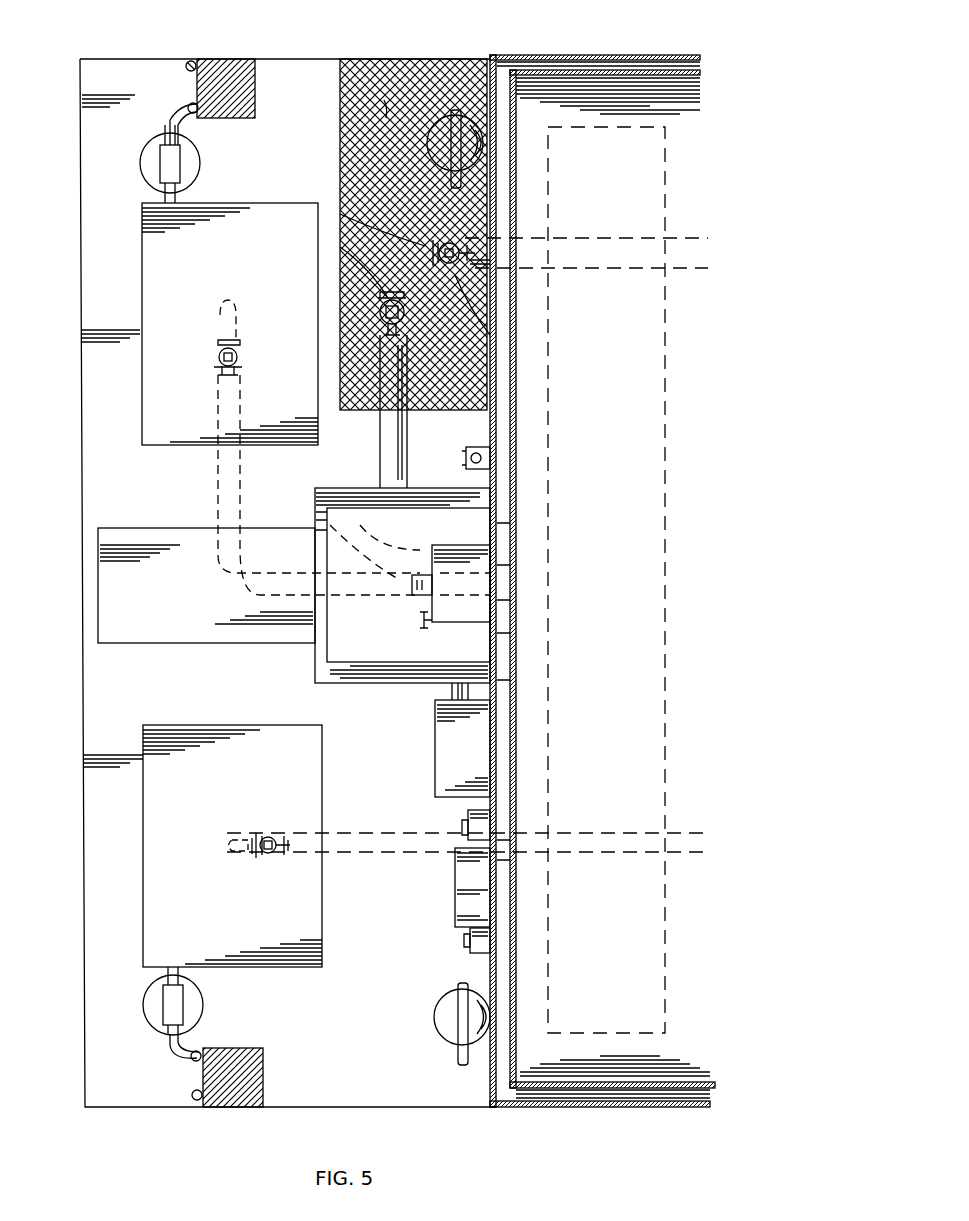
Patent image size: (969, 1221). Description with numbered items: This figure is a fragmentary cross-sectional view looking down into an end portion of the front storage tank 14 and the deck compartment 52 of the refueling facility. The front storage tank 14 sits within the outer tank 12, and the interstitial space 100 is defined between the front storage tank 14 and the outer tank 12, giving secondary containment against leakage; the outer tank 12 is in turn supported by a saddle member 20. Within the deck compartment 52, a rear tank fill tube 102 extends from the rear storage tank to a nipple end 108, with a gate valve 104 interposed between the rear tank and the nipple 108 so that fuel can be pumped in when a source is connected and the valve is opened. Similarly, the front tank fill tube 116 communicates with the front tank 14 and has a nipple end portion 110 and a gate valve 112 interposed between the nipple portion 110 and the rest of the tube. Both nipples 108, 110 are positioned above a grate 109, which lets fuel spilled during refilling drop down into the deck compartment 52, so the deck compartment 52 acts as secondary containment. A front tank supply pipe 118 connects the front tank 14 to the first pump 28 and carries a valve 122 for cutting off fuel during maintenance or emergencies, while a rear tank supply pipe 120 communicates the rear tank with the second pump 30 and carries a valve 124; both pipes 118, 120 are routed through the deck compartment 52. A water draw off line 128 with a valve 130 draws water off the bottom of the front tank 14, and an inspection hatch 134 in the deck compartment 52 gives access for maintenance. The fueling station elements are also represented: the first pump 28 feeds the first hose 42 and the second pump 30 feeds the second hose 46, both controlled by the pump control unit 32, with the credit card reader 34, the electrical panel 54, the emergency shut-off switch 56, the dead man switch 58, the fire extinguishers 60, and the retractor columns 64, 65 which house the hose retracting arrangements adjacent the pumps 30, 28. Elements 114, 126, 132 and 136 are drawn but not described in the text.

The outer tank 12 is at (615, 1104).
The front inner storage tank 14 is at (590, 1082).
The saddle member 20 is at (668, 450).
The first pump 28 is at (142, 302).
The second pump 30 is at (143, 850).
The pump control unit 32 is at (435, 745).
The credit card reader 34 is at (355, 685).
The first hose 42 is at (178, 100).
The second hose 46 is at (193, 1097).
The deck compartment 52 is at (80, 437).
The electrical panel 54 is at (455, 888).
The emergency shut-off switch 56 is at (462, 828).
The dead man switch 58 is at (465, 942).
The fire extinguisher 60 is at (450, 115).
The retractor column 64 is at (263, 1078).
The retractor column 65 is at (230, 118).
The interstitial space 100 is at (570, 1107).
The rear tank fill tube 102 is at (580, 230).
The gate valve 104 is at (455, 265).
The nipple end 108 is at (340, 205).
The grate 109 is at (385, 100).
The nipple end portion 110 is at (340, 240).
The gate valve 112 is at (370, 312).
The fitting 114 is at (464, 456).
The front tank fill tube 116 is at (378, 438).
The front tank supply pipe 118 is at (218, 455).
The rear tank supply pipe 120 is at (590, 830).
The valve 122 is at (242, 342).
The valve 124 is at (255, 832).
The coupling 126 is at (140, 165).
The water draw off line 128 is at (465, 628).
The valve 130 is at (420, 620).
The inner housing 132 is at (327, 665).
The inspection hatch 134 is at (125, 645).
The fitting 136 is at (412, 585).